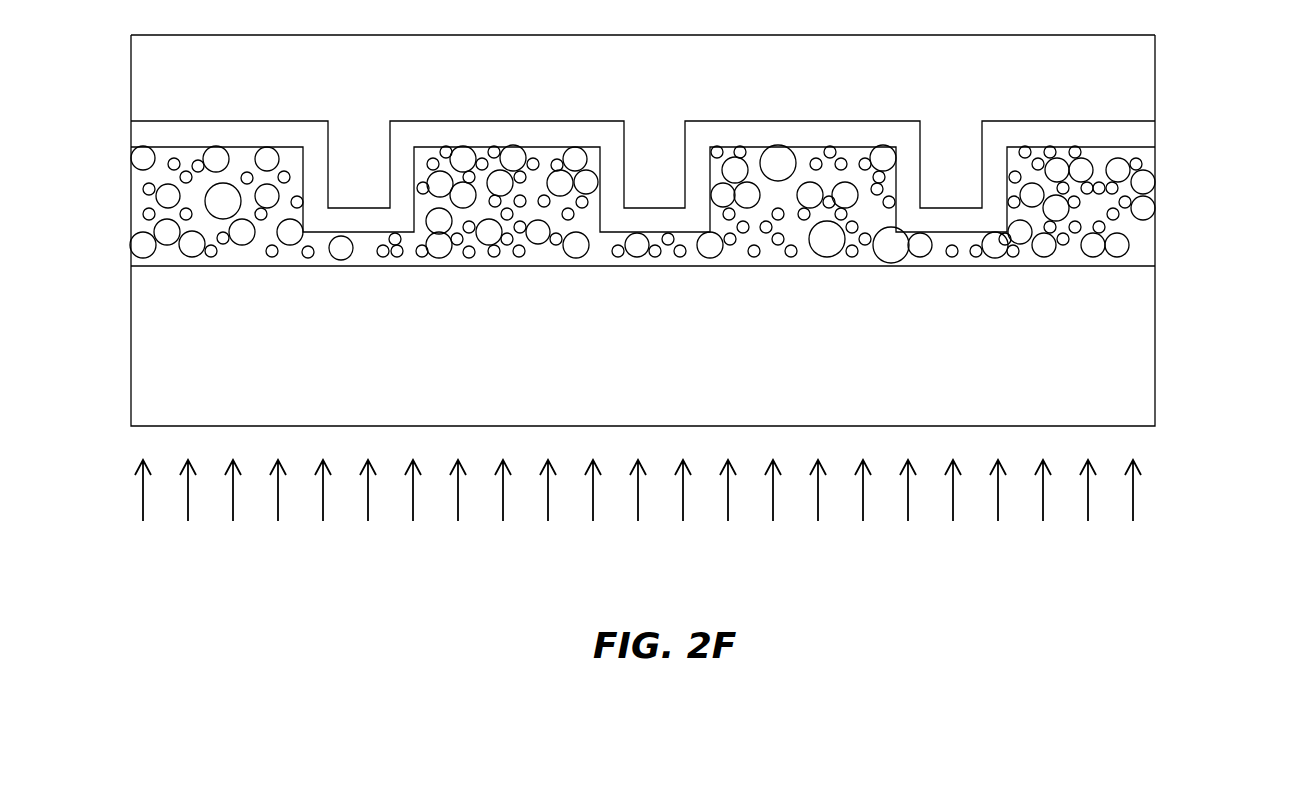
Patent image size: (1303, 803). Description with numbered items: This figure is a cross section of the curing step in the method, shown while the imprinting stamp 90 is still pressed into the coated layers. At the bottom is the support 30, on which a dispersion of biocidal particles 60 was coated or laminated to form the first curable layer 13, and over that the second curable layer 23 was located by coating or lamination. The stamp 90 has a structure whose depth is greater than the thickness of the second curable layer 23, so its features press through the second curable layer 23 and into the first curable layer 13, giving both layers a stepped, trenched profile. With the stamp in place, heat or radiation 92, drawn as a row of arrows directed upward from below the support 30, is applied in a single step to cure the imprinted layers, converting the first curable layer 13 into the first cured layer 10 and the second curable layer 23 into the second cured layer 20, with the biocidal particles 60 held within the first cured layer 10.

The first cured layer 10 is at (694, 159).
The first curable layer 13 is at (1155, 240).
The second cured layer 20 is at (695, 176).
The second curable layer 23 is at (1155, 136).
The support 30 is at (1155, 337).
The biocidal particles 60 is at (459, 147).
The imprinting stamp 90 is at (1155, 74).
The radiation 92 is at (1133, 497).